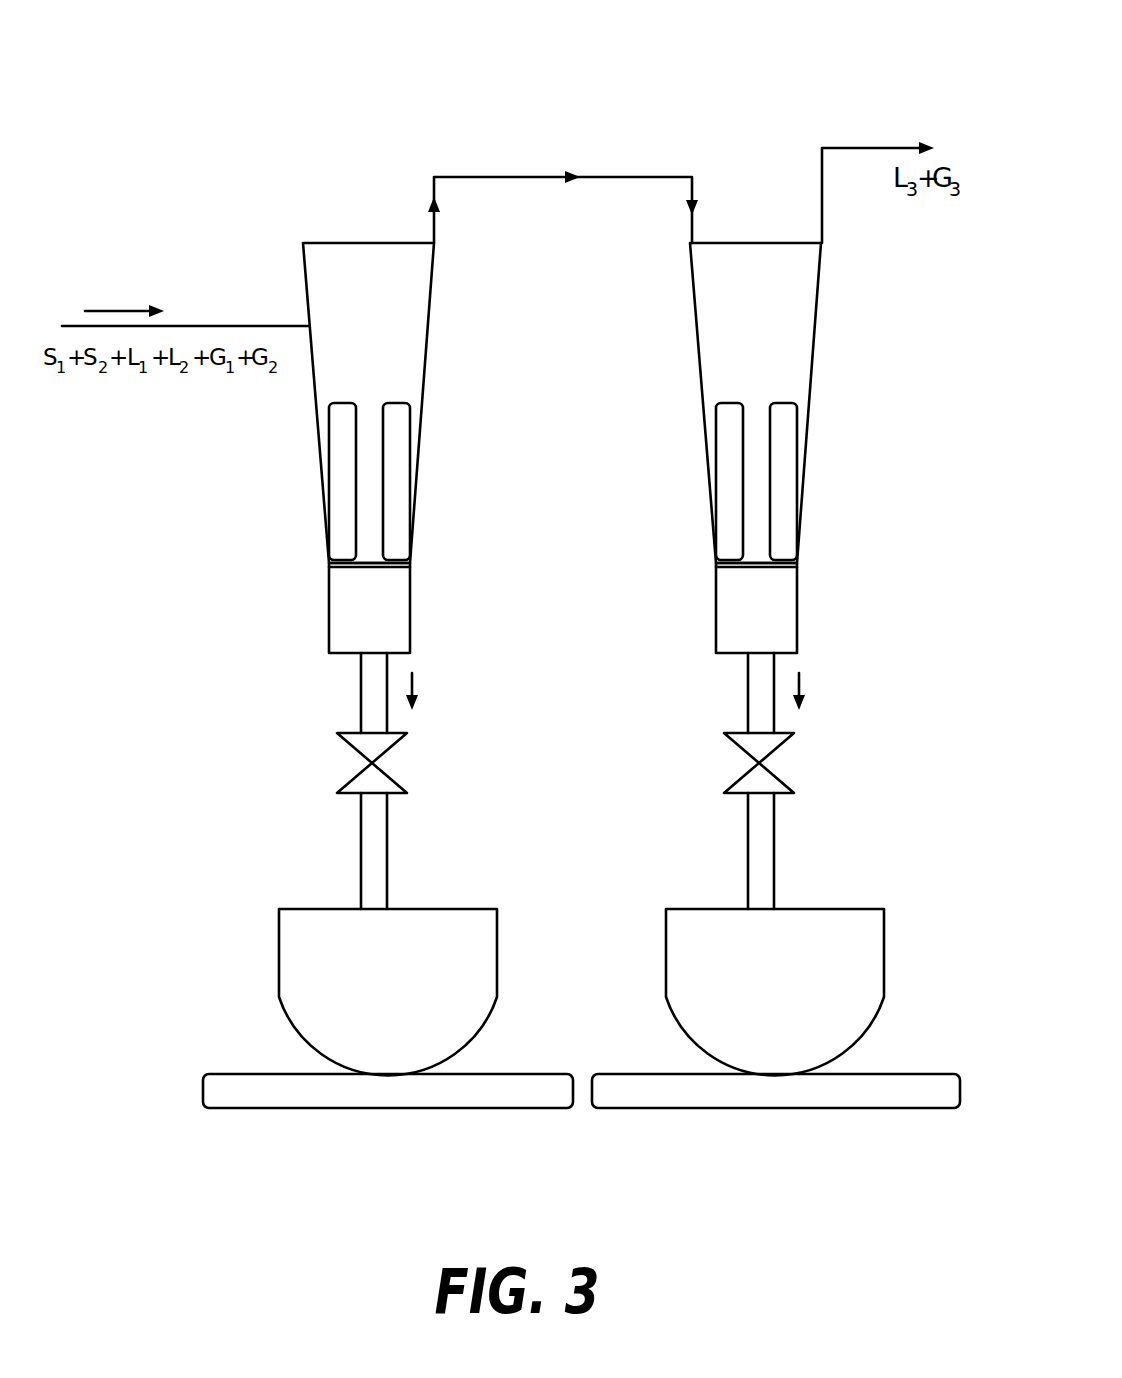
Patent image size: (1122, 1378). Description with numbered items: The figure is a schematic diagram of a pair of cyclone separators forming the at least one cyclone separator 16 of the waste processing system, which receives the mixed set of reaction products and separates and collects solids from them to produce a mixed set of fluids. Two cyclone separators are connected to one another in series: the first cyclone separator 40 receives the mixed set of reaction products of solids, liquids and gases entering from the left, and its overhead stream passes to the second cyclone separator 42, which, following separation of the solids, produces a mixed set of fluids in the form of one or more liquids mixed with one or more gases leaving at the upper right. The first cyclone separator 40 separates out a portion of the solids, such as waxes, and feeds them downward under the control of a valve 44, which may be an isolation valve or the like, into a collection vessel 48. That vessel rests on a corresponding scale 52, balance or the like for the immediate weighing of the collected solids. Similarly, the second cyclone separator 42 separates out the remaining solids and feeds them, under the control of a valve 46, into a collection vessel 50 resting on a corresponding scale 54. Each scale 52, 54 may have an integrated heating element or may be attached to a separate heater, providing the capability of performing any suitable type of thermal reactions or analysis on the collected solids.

The cyclone separator 16 is at (484, 58).
The first cyclone separator 40 is at (428, 342).
The second cyclone separator 42 is at (699, 350).
The valve 44 is at (398, 786).
The valve 46 is at (785, 786).
The collection vessel 48 is at (462, 909).
The collection vessel 50 is at (860, 909).
The scale 52 is at (397, 1108).
The scale 54 is at (787, 1108).